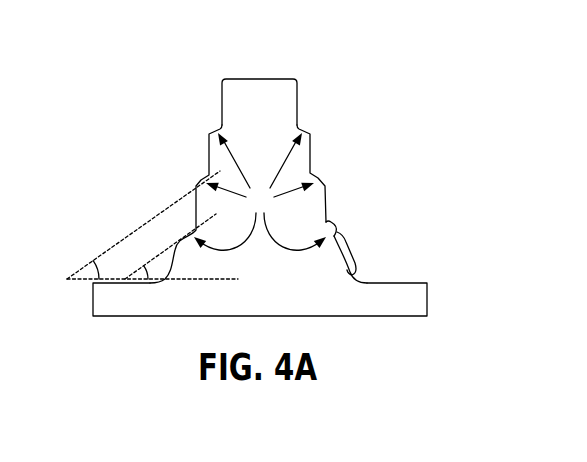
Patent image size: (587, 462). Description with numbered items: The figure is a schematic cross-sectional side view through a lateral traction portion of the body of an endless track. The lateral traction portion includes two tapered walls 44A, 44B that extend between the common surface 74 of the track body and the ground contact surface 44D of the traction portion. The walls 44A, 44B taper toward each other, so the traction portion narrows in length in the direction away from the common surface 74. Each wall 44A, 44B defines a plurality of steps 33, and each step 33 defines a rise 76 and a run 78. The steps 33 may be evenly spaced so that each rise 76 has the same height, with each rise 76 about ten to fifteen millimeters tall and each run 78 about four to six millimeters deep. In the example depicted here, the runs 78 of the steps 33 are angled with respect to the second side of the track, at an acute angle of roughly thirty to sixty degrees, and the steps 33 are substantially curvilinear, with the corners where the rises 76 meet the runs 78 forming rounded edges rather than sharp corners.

The common surface 74 is at (416, 279).
The ground contact surface 44D is at (260, 79).
The tapered wall 44B is at (208, 165).
The tapered wall 44A is at (310, 173).
The run 78 is at (334, 227).
The rise 76 is at (355, 255).
The steps 33 is at (260, 191).